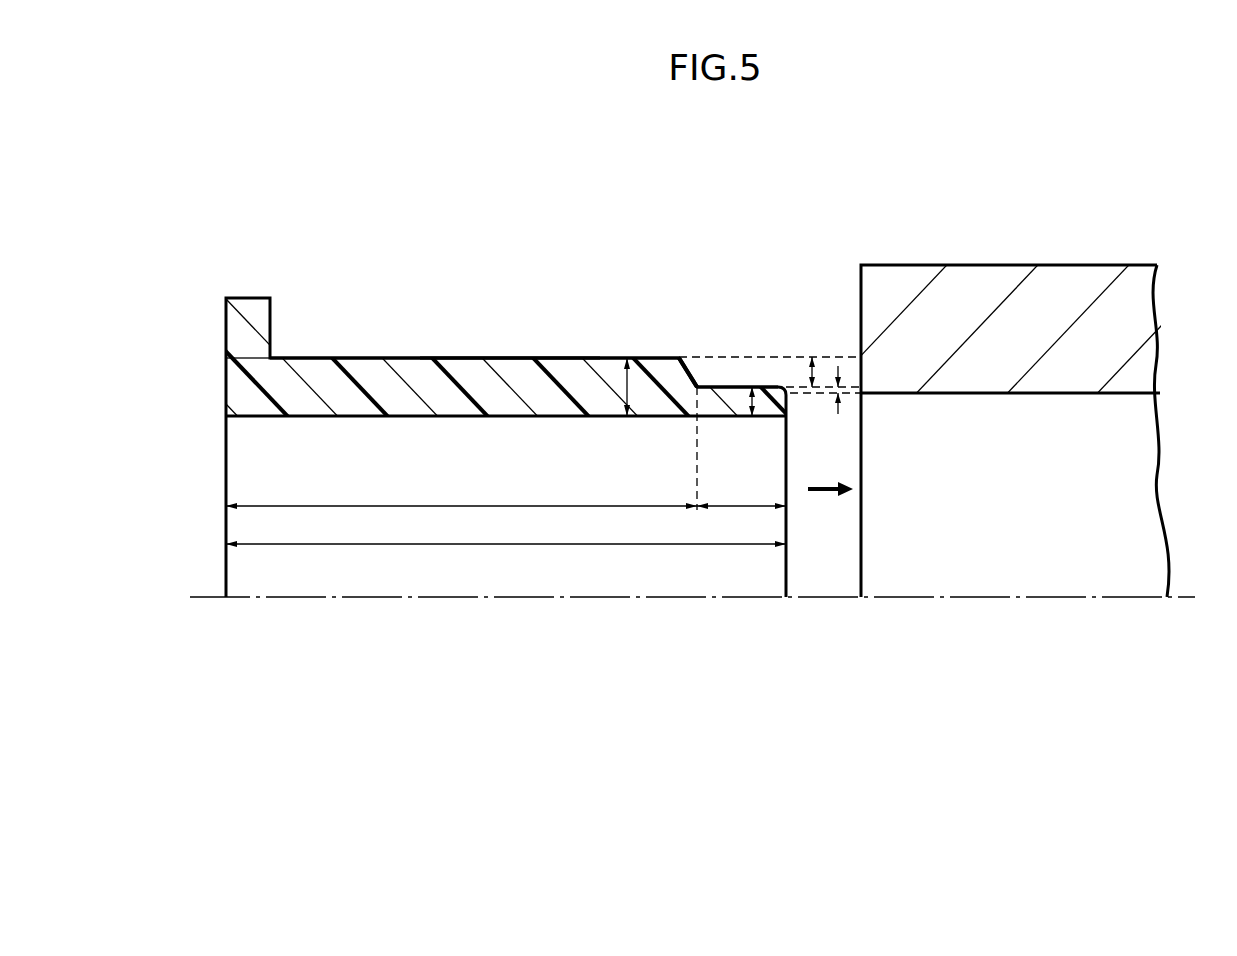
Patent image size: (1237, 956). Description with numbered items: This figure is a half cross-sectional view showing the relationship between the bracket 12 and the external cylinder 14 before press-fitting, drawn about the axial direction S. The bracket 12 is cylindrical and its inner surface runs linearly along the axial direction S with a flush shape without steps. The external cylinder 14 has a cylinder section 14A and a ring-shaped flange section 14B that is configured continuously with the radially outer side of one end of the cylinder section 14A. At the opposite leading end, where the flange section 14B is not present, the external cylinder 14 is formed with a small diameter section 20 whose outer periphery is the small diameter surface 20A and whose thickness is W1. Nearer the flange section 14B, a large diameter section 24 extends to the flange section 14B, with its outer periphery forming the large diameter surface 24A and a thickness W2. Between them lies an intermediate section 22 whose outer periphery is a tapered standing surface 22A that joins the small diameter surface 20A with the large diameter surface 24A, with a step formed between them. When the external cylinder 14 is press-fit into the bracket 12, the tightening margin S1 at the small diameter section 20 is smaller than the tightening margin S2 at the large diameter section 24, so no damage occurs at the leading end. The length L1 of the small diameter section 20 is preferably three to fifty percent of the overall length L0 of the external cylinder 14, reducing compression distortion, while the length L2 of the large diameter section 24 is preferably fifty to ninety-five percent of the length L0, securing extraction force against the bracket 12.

The bracket 12 is at (1007, 265).
The external cylinder 14 is at (466, 232).
The cylinder section 14A is at (394, 327).
The flange section 14B is at (245, 297).
The small diameter section 20 is at (735, 418).
The small diameter surface 20A is at (722, 386).
The intermediate section 22 is at (672, 418).
The standing surface 22A is at (693, 374).
The large diameter section 24 is at (483, 418).
The large diameter surface 24A is at (488, 357).
The axial direction S is at (313, 599).
The length of the external cylinder L0 is at (512, 545).
The length of the small diameter section L1 is at (737, 507).
The length of the large diameter section L2 is at (542, 507).
The thickness of the small diameter section W1 is at (764, 398).
The thickness of the large diameter section W2 is at (632, 385).
The tightening margin of the small diameter section S1 is at (832, 390).
The tightening margin of the large diameter section S2 is at (806, 372).